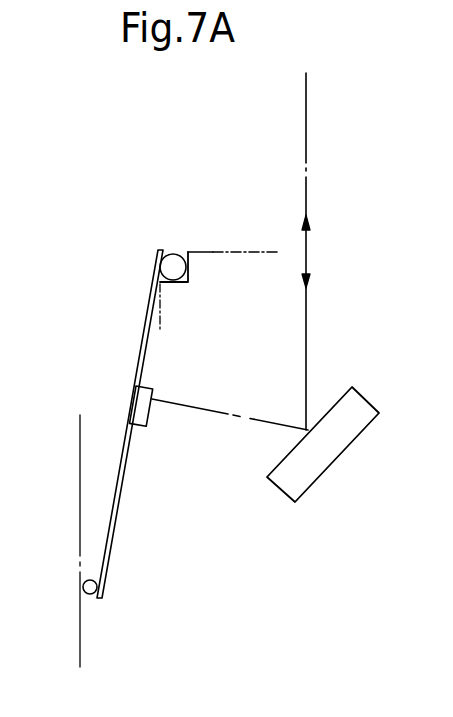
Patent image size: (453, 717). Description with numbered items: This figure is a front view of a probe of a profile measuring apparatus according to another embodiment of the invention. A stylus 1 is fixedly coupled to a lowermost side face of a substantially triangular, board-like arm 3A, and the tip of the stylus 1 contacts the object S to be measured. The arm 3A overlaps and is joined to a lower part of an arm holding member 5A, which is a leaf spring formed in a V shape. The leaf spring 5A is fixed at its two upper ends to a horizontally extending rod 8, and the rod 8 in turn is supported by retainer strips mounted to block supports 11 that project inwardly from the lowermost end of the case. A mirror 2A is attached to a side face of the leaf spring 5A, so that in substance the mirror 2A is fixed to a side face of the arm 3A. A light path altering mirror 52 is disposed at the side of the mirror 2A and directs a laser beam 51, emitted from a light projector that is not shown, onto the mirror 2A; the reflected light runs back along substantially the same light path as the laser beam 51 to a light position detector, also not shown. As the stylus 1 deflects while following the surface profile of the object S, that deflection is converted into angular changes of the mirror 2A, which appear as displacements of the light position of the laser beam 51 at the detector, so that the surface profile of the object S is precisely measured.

The stylus 1 is at (82, 588).
The mirror 2A is at (150, 425).
The board-like arm 3A is at (112, 495).
The arm holding member 5A is at (146, 324).
The rod 8 is at (171, 254).
The block support 11 is at (213, 251).
The laser beam 51 is at (306, 255).
The light path altering mirror 52 is at (333, 464).
The object to be measured S is at (85, 626).